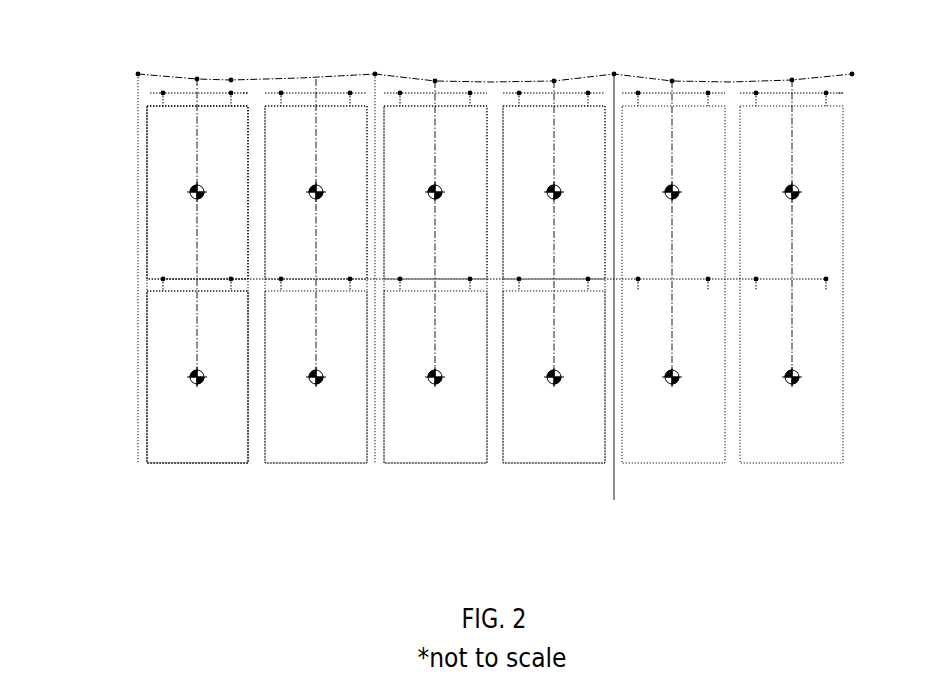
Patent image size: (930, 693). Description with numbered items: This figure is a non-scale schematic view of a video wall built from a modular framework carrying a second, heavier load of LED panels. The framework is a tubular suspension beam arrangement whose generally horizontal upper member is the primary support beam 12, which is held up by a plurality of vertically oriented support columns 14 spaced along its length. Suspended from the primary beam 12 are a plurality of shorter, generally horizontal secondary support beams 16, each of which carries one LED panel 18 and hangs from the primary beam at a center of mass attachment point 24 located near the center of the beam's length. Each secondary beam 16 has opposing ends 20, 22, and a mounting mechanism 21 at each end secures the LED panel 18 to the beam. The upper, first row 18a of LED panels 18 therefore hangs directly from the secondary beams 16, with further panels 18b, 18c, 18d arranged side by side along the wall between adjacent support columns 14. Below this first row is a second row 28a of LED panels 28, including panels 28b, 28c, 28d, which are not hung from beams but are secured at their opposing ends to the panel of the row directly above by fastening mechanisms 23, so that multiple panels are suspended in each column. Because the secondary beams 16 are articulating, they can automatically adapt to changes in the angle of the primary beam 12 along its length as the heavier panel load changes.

The primary support beam 12 is at (237, 79).
The support column 14 is at (376, 500).
The secondary support beam 16 is at (575, 93).
The LED panel 18 is at (172, 252).
The first row of LED panels 18a is at (167, 165).
The solar panel 18b is at (349, 118).
The solar panel 18c is at (464, 115).
The solar panel 18d is at (538, 115).
The opposing end of secondary beam 20 is at (150, 93).
The mounting mechanism 21 is at (163, 93).
The opposing end of secondary beam 22 is at (248, 93).
The fastening mechanism 23 is at (163, 279).
The center of mass attachment point 24 is at (197, 79).
The LED panel 28 is at (172, 422).
The second row of LED panels 28a is at (231, 440).
The solar panel 28b is at (316, 440).
The solar panel 28c is at (446, 432).
The solar panel 28d is at (553, 440).